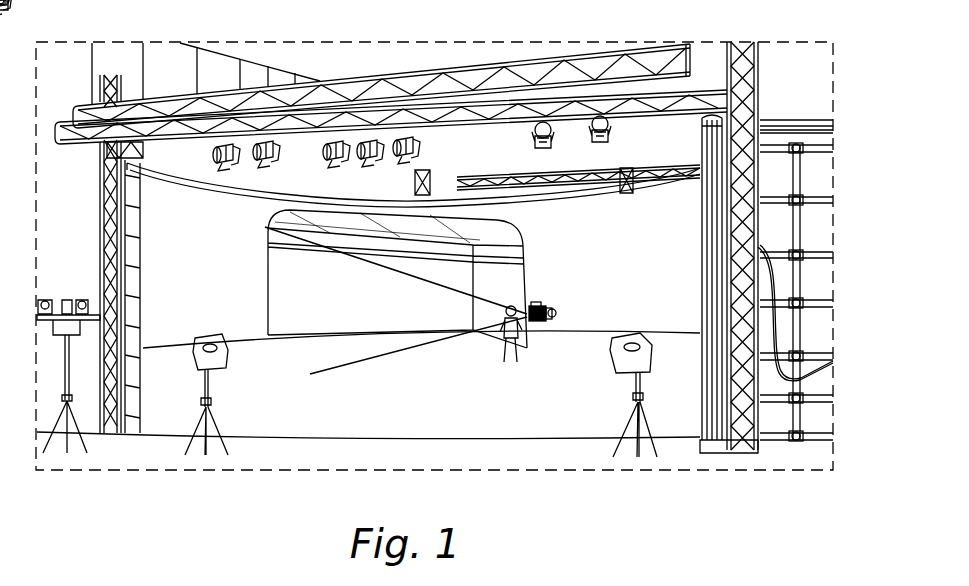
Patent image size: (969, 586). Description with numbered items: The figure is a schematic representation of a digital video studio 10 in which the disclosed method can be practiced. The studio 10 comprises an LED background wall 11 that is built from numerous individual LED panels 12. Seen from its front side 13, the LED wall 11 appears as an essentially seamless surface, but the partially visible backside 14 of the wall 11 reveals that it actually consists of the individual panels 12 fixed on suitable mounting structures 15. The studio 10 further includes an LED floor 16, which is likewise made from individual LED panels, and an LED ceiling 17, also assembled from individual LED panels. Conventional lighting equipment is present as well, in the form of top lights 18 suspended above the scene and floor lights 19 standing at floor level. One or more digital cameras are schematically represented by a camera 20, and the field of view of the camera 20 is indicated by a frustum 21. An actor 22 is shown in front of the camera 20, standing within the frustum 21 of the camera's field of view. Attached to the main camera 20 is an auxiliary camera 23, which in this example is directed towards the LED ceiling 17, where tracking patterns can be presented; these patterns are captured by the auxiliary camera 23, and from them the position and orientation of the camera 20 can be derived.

The digital video studio 10 is at (543, 440).
The LED background wall 11 is at (178, 236).
The LED panels 12 is at (794, 228).
The front side 13 is at (234, 303).
The backside 14 is at (809, 331).
The mounting structures 15 is at (800, 173).
The LED floor 16 is at (307, 412).
The LED ceiling 17 is at (450, 138).
The top lights 18 is at (322, 142).
The floor lights 19 is at (203, 362).
The camera 20 is at (546, 315).
The frustum 21 is at (374, 358).
The actor 22 is at (505, 333).
The auxiliary camera 23 is at (534, 306).